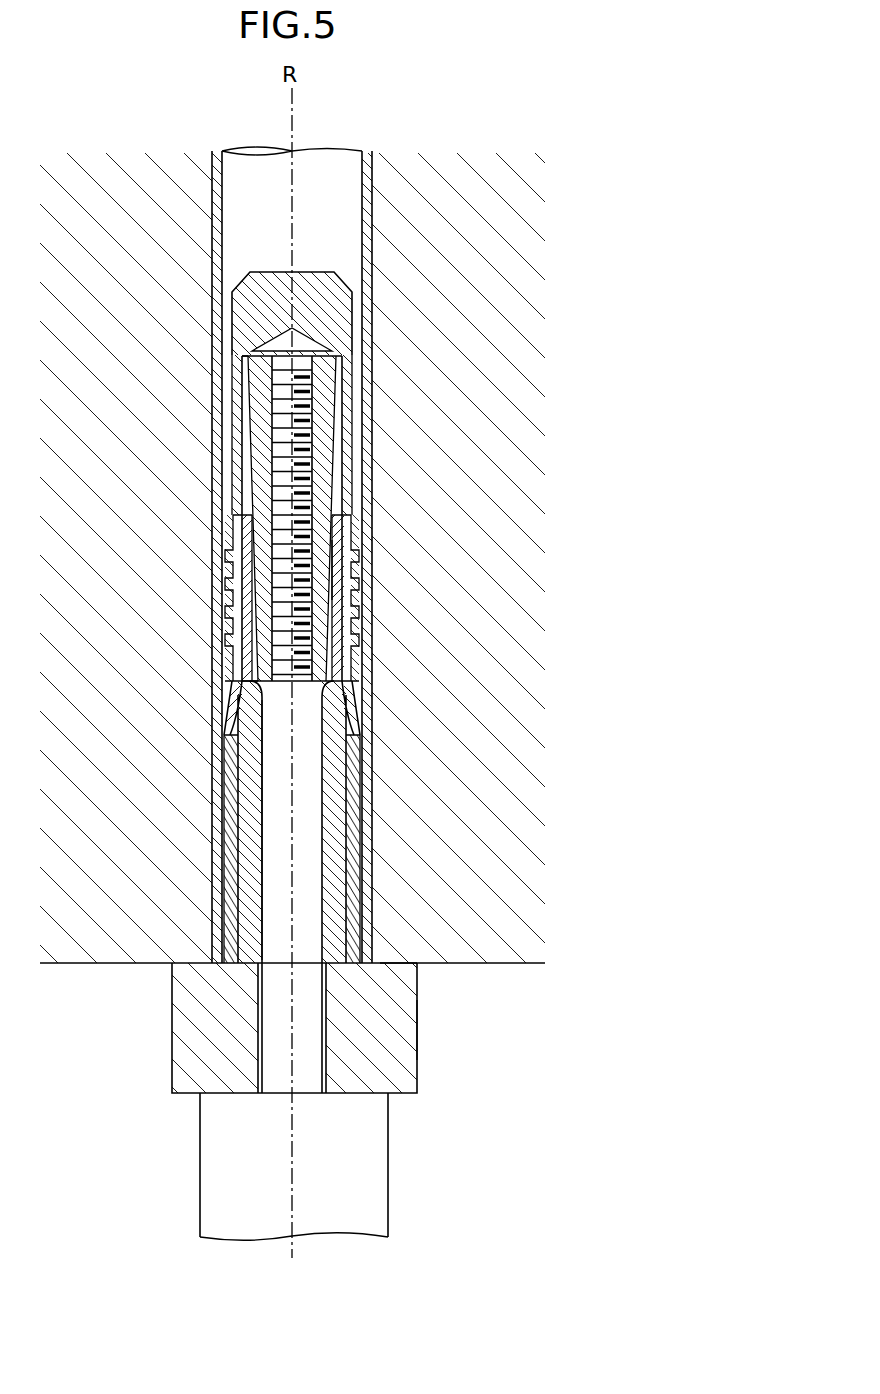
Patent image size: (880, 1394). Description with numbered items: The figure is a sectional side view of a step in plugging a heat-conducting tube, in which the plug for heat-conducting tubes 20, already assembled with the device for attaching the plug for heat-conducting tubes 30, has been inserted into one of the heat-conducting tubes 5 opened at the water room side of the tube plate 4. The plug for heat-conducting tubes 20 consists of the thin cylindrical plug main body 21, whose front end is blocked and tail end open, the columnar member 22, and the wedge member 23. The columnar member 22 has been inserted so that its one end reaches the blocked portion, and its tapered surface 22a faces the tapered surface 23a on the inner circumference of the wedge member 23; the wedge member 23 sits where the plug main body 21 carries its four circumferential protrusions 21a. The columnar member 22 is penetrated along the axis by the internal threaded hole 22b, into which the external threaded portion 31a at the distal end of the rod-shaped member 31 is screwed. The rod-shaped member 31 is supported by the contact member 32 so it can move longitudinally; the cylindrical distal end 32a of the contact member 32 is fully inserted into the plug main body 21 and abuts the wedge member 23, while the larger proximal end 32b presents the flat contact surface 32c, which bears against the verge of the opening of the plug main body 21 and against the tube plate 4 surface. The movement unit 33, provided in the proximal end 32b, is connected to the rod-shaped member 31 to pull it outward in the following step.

The tube plate 4 is at (518, 957).
The heat-conducting tubes 5 is at (355, 188).
The plug for heat-conducting tubes 20 is at (458, 476).
The plug main body 21 is at (445, 476).
The protrusions 21a is at (357, 613).
The columnar member 22 is at (447, 518).
The tapered surface 22a is at (335, 410).
The internal threaded hole 22b is at (302, 456).
The wedge member 23 is at (462, 598).
The tapered surface 23a is at (334, 578).
The device for attaching the plug for heat-conducting tubes 30 is at (431, 862).
The rod-shaped member 31 is at (457, 788).
The external threaded portion 31a is at (310, 492).
The contact member 32 is at (413, 913).
The distal end 32a is at (368, 740).
The proximal end 32b is at (402, 1040).
The contact surface 32c is at (398, 961).
The movement unit 33 is at (375, 1163).